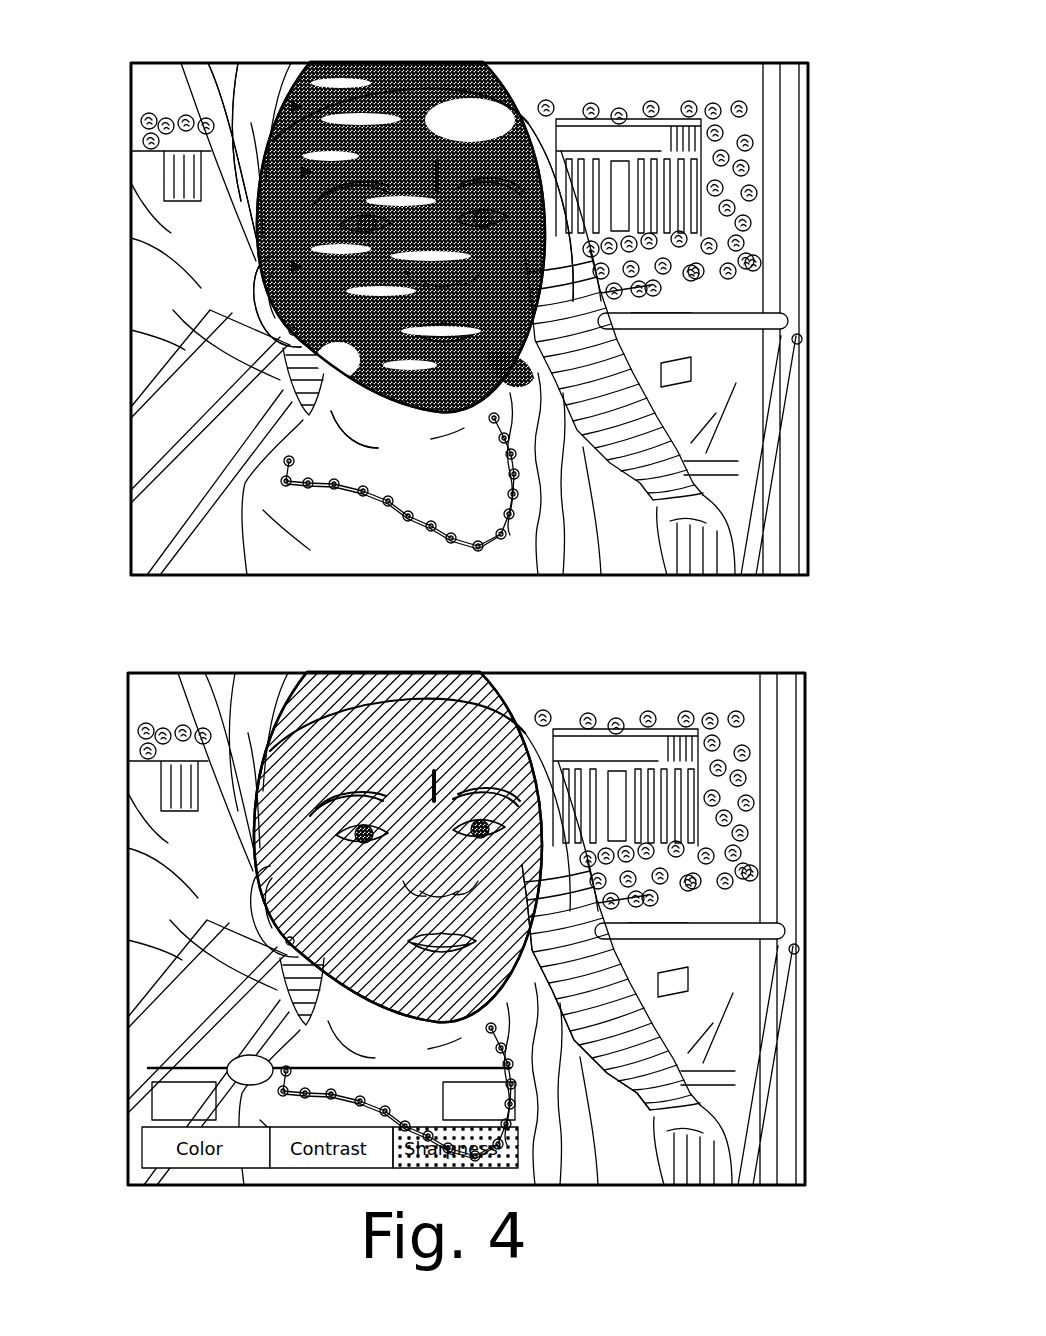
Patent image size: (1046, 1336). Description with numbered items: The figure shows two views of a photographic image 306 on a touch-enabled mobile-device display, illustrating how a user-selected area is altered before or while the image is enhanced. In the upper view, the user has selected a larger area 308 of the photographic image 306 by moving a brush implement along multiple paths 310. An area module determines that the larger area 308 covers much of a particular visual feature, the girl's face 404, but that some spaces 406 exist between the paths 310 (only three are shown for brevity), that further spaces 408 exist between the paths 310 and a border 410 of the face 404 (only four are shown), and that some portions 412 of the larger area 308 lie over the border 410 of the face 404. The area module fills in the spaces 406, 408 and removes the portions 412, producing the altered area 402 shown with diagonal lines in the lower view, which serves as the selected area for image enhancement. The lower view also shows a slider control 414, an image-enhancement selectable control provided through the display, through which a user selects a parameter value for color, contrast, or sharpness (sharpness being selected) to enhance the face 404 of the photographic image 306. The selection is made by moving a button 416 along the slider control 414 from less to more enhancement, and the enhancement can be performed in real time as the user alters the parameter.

The photographic image 306 is at (186, 89).
The larger area 308 is at (262, 250).
The paths 310 is at (598, 128).
The altered area 402 is at (325, 757).
The face 404 is at (377, 447).
The spaces 406 is at (462, 128).
The spaces 408 is at (247, 327).
The border 410 is at (277, 380).
The portions 412 is at (650, 317).
The slider control 414 is at (190, 1066).
The button 416 is at (246, 1058).